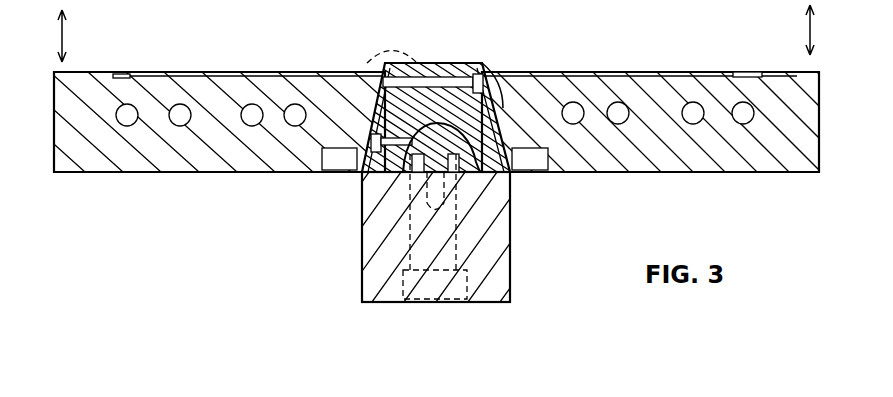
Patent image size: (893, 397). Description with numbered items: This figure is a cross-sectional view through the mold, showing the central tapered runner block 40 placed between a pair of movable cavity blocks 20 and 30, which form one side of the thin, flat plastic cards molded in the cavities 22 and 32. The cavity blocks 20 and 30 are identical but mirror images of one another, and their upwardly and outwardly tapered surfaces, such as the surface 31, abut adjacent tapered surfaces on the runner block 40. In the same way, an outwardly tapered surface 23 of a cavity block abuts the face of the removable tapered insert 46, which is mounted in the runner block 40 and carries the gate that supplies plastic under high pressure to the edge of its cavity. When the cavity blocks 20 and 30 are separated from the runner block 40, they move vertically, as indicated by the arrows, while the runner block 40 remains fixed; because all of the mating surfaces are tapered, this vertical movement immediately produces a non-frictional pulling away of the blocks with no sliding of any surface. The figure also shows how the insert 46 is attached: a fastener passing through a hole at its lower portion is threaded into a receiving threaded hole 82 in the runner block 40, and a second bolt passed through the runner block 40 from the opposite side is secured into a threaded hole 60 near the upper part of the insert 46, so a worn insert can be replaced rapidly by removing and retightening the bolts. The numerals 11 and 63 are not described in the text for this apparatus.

The apparatus 11 is at (380, 73).
The cavity block 20 is at (95, 158).
The cavity 22 is at (213, 87).
The tapered surface 23 is at (362, 190).
The cavity block 30 is at (600, 160).
The tapered surface 31 is at (503, 108).
The cavity 32 is at (618, 71).
The runner block 40 is at (375, 242).
The insert 46 is at (372, 118).
The threaded hole 60 is at (402, 76).
The groove 63 is at (453, 63).
The threaded hole 82 is at (481, 172).